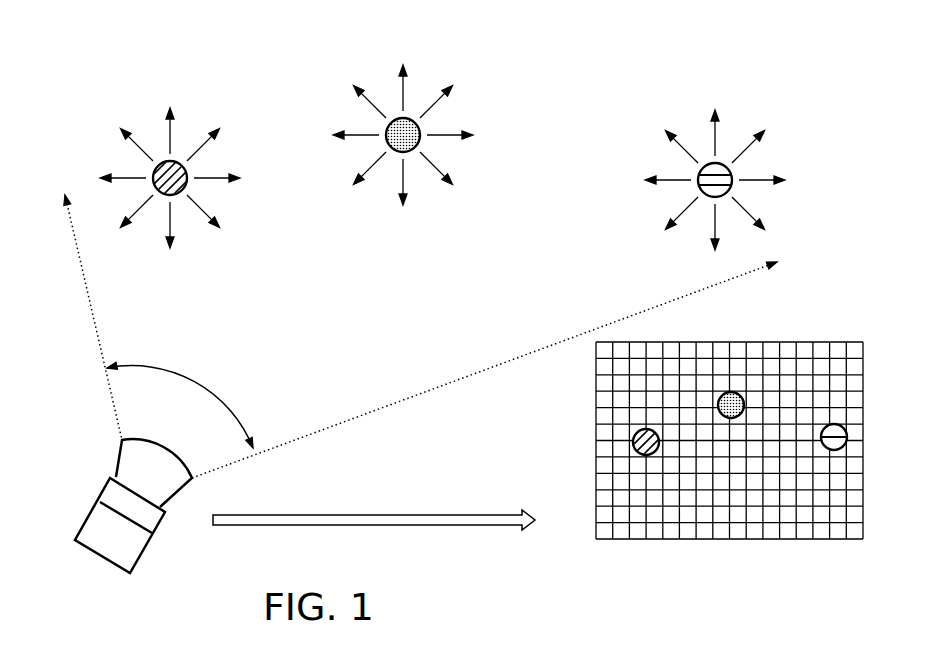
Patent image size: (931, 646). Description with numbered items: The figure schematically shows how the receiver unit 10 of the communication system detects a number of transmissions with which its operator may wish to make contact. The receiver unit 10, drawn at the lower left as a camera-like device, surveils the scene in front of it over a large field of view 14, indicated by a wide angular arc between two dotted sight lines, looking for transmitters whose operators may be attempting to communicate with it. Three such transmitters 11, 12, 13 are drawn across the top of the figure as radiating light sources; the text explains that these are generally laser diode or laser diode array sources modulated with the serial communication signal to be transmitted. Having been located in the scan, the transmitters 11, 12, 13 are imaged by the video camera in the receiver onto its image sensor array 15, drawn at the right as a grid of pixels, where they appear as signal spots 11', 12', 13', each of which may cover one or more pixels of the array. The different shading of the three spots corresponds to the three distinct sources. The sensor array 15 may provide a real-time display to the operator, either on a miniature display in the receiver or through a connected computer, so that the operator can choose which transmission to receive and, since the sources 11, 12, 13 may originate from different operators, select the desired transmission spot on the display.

The receiver unit 10 is at (110, 482).
The transmitter 11 is at (170, 150).
The transmitter 12 is at (403, 114).
The transmitter 13 is at (715, 164).
The field of view 14 is at (200, 386).
The image sensor array 15 is at (623, 540).
The signal spot 11' is at (597, 442).
The signal spot 12' is at (741, 357).
The signal spot 13' is at (843, 371).